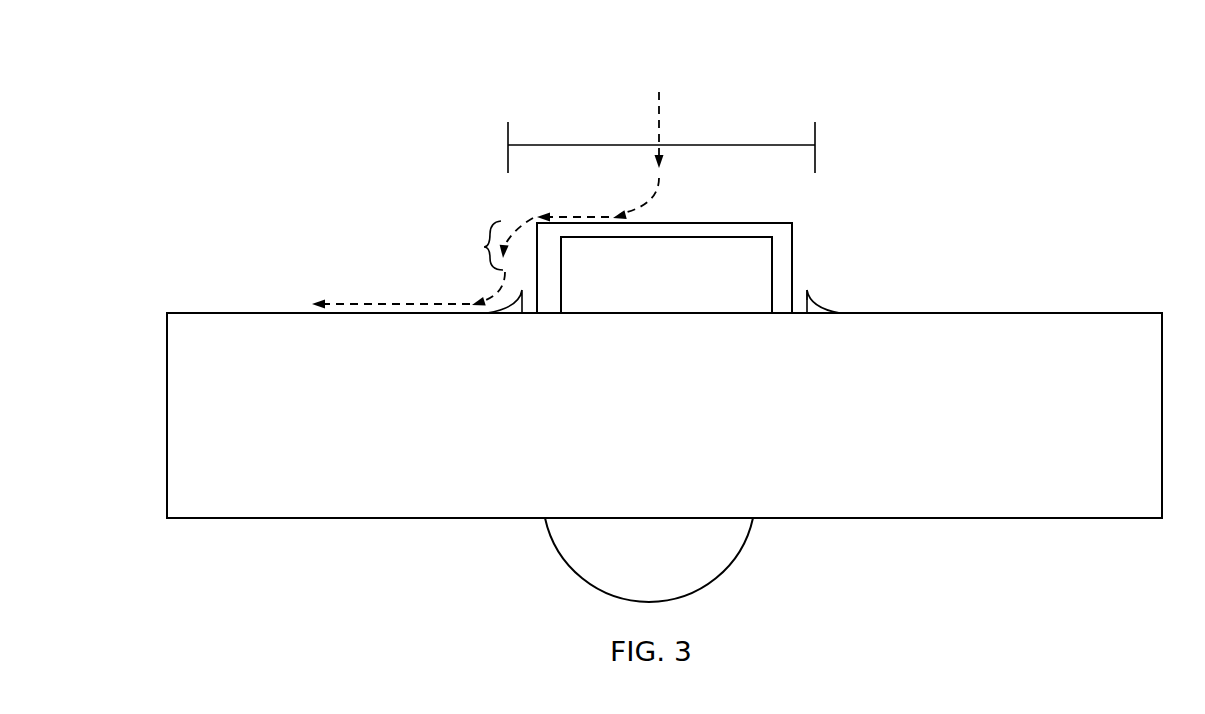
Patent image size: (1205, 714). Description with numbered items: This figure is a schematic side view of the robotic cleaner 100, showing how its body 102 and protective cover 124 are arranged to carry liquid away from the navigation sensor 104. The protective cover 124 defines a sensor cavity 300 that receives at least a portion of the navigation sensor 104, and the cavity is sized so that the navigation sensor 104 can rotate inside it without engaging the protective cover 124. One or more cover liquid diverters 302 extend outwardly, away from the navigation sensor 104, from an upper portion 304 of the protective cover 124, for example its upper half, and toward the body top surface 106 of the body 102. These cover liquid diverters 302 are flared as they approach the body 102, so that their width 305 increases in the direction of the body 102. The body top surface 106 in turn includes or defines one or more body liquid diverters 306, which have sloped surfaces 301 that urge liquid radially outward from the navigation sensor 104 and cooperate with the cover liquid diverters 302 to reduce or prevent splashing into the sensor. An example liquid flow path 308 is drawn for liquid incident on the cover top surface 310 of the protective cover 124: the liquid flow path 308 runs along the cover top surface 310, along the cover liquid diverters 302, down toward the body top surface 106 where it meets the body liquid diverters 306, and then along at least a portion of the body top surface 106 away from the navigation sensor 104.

The robotic cleaner 100 is at (153, 143).
The body 102 is at (165, 400).
The navigation sensor 104 is at (772, 285).
The body top surface 106 is at (267, 310).
The protective cover 124 is at (760, 223).
The sensor cavity 300 is at (788, 253).
The sloped surfaces 301 is at (823, 290).
The cover liquid diverters 302 is at (792, 223).
The upper portion 304 is at (484, 247).
The width 305 is at (822, 135).
The body liquid diverters 306 is at (827, 307).
The liquid flow path 308 is at (660, 103).
The cover top surface 310 is at (682, 212).